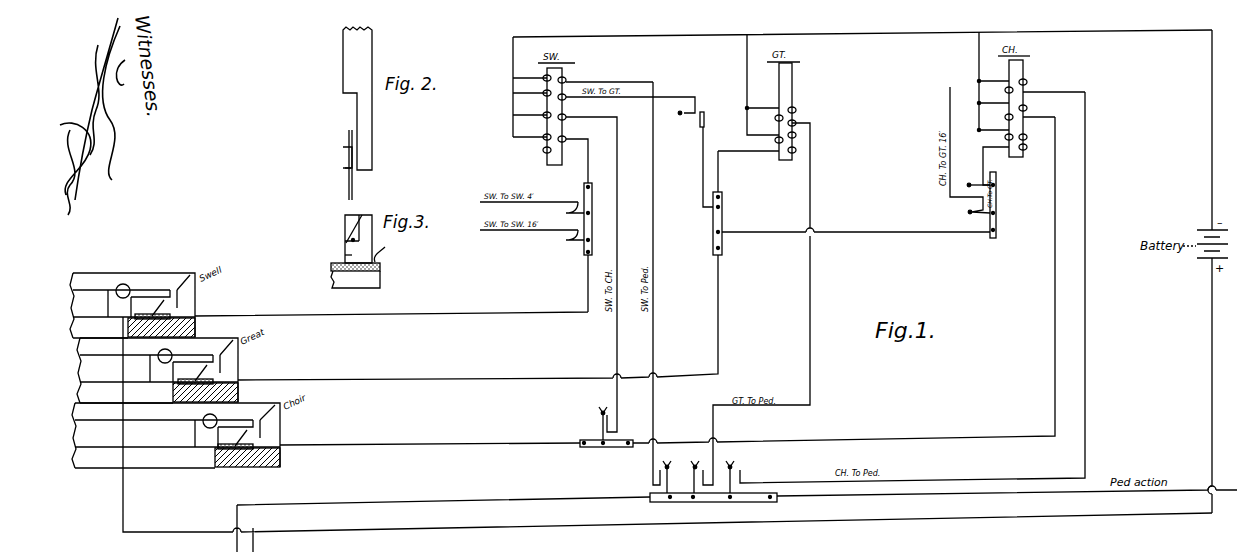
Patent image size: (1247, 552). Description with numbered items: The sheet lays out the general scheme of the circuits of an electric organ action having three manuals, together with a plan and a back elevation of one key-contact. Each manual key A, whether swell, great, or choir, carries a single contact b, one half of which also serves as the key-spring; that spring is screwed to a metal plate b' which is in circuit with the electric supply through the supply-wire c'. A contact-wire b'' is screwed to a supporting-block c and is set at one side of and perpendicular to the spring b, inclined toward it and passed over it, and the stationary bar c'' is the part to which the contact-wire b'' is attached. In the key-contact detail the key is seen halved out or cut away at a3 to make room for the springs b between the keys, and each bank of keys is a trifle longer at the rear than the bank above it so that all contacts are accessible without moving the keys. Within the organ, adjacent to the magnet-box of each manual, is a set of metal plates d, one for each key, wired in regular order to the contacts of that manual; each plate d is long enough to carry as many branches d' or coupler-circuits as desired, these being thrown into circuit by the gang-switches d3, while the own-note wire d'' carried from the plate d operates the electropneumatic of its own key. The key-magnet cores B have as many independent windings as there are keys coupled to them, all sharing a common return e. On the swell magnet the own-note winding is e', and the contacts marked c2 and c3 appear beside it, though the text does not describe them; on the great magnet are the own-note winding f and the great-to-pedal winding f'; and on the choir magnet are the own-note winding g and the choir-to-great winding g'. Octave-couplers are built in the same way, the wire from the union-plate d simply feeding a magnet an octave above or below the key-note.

In FIG. 2, the key A is at (367, 60).
In FIG. 3, the key A is at (345, 224).
In FIG. 1, the key A is at (73, 298).
In FIG. 2, the cut-away portion of key a3 is at (357, 113).
In FIG. 2, the contact b is at (358, 166).
In FIG. 3, the contact b is at (337, 231).
In FIG. 1, the contact b is at (228, 371).
In FIG. 1, the metal plate b' is at (174, 390).
In FIG. 2, the contact-wire b'' is at (336, 178).
In FIG. 3, the contact-wire b'' is at (332, 257).
In FIG. 1, the contact-wire b'' is at (229, 338).
In FIG. 3, the supporting-block c is at (366, 267).
In FIG. 1, the supporting-block c is at (213, 393).
In FIG. 1, the supply-wire c' is at (667, 434).
In FIG. 1, the stop contact c2 is at (583, 82).
In FIG. 1, the stop contact c3 is at (604, 101).
In FIG. 1, the stationary bar c'' is at (565, 272).
In FIG. 1, the common return e is at (753, 83).
In FIG. 1, the own-note winding e' is at (550, 158).
In FIG. 1, the key-magnet core B is at (562, 104).
In FIG. 1, the metal plate d is at (794, 313).
In FIG. 1, the branch d' is at (780, 302).
In FIG. 1, the own-note wire d'' is at (681, 296).
In FIG. 1, the gang-switch d3 is at (700, 463).
In FIG. 1, the own-note winding f is at (801, 136).
In FIG. 1, the great-to-pedal winding f' is at (797, 111).
In FIG. 1, the own-note winding g is at (1024, 99).
In FIG. 1, the choir-to-great winding g' is at (1022, 147).